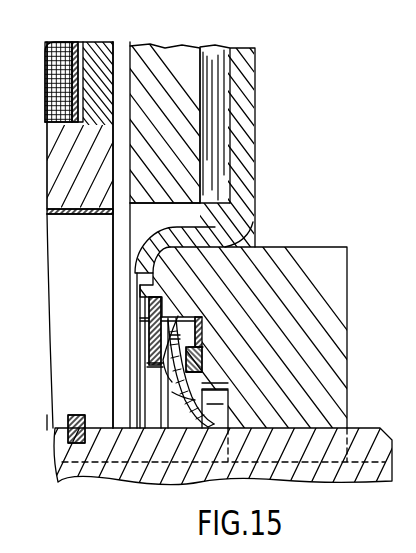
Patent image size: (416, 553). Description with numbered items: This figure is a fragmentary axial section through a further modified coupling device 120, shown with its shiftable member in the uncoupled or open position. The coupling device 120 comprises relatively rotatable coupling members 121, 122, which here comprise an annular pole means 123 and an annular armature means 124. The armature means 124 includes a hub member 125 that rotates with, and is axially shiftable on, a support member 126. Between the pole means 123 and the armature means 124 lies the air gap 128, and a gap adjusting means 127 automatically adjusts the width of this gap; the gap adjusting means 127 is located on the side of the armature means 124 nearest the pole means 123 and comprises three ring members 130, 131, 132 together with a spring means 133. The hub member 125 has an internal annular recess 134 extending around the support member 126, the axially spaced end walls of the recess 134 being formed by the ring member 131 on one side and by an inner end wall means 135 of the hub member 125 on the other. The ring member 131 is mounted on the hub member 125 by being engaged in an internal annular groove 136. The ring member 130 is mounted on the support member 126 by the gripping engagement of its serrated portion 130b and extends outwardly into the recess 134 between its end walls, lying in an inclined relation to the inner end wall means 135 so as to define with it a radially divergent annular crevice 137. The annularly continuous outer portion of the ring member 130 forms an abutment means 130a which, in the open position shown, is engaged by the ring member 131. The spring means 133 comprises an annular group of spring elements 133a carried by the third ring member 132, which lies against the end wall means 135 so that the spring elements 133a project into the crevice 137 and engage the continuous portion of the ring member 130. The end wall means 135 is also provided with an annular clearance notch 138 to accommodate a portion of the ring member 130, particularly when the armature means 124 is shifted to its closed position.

The coupling device 120 is at (305, 73).
The coupling member 121 is at (93, 45).
The coupling member 122 is at (164, 49).
The annular pole means 123 is at (57, 215).
The annular armature means 124 is at (143, 206).
The hub member 125 is at (300, 256).
The support member 126 is at (360, 438).
The gap adjusting means 127 is at (148, 328).
The air gap 128 is at (119, 214).
The ring member 130 is at (135, 480).
The abutment means 130a is at (168, 375).
The serrated portion 130b is at (180, 432).
The ring member 131 is at (160, 352).
The third ring member 132 is at (200, 333).
The spring means 133 is at (183, 318).
The spring elements 133a is at (172, 395).
The internal annular recess 134 is at (172, 300).
The inner end wall means 135 is at (204, 362).
The internal annular groove 136 is at (149, 300).
The annular crevice 137 is at (158, 345).
The annular clearance notch 138 is at (225, 392).